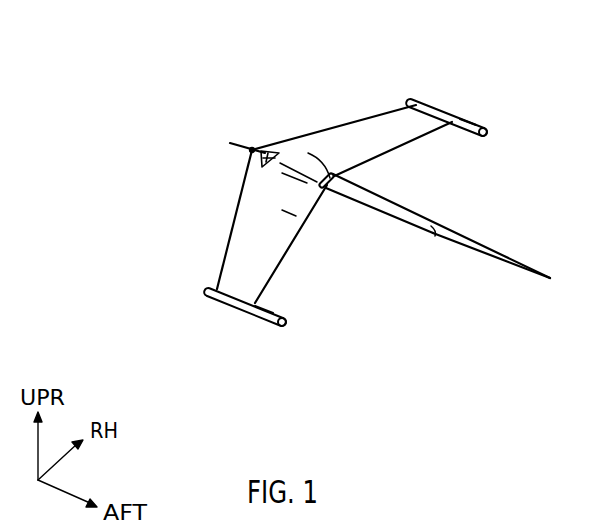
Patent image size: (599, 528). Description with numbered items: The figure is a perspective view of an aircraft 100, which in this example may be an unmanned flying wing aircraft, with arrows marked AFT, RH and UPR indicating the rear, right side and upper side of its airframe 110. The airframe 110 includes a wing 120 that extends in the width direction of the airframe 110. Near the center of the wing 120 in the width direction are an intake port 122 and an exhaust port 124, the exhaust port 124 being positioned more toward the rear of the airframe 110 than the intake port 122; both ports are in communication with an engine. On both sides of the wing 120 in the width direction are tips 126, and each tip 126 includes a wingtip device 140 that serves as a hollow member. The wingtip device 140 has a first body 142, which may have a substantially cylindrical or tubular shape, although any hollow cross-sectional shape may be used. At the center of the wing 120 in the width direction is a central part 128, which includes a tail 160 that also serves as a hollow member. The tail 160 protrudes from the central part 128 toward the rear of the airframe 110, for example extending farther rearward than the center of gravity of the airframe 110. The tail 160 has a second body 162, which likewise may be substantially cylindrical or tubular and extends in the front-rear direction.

The aircraft 100 is at (292, 36).
The airframe 110 is at (360, 119).
The wing 120 is at (314, 130).
The intake port 122 is at (259, 148).
The exhaust port 124 is at (329, 192).
The tip 126 is at (423, 102).
The central part 128 is at (282, 164).
The wingtip device 140 is at (472, 121).
The first body 142 is at (481, 125).
The tail 160 is at (403, 207).
The second body 162 is at (435, 224).